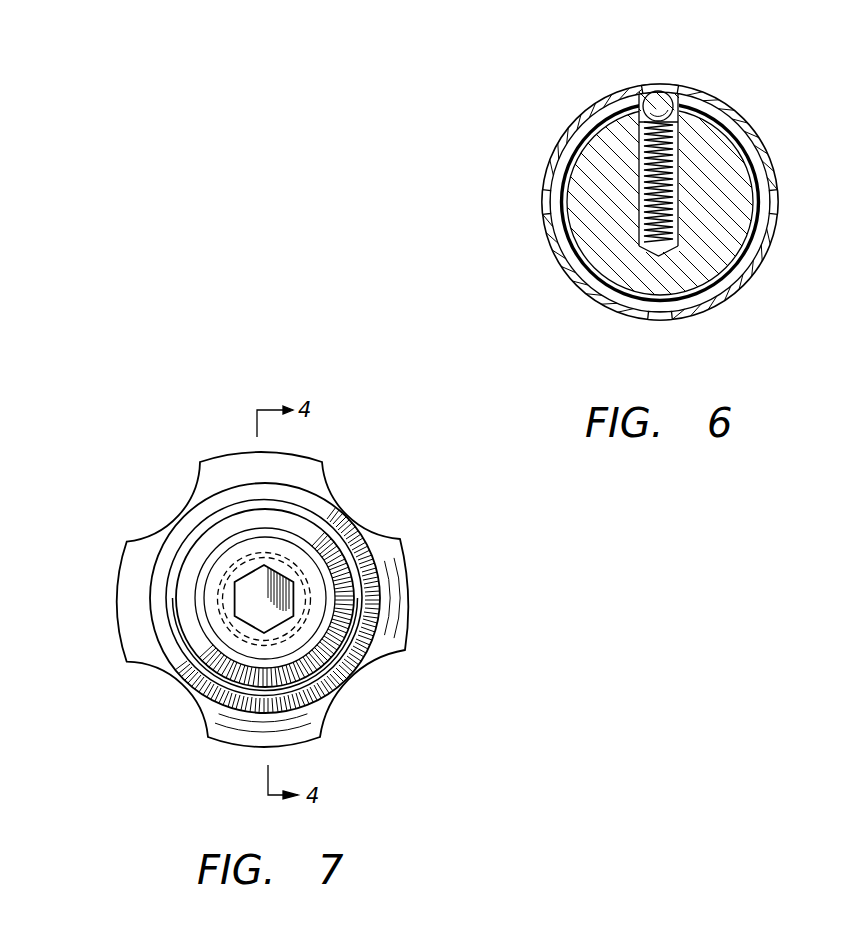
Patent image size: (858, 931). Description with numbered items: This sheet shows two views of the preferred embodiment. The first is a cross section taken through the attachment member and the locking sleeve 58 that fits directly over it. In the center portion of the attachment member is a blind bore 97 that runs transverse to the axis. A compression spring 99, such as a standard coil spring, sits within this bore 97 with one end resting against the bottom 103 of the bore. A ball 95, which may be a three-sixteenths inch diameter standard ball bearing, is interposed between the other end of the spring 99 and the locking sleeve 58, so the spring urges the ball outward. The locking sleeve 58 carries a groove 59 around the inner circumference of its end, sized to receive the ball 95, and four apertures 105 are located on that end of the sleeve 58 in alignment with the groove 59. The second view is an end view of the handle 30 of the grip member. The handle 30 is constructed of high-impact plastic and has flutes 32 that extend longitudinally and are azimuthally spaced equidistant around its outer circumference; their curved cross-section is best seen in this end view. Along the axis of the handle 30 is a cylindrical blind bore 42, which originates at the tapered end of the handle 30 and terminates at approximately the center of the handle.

In FIG. 7, the handle 30 is at (371, 530).
In FIG. 7, the flutes 32 is at (220, 457).
In FIG. 7, the cylindrical blind bore 42 is at (250, 587).
In FIG. 6, the locking sleeve 58 is at (559, 143).
In FIG. 6, the groove 59 is at (607, 115).
In FIG. 6, the ball 95 is at (652, 96).
In FIG. 6, the blind bore 97 is at (684, 128).
In FIG. 6, the compression spring 99 is at (668, 186).
In FIG. 6, the bottom 103 is at (634, 232).
In FIG. 6, the apertures 105 is at (664, 88).